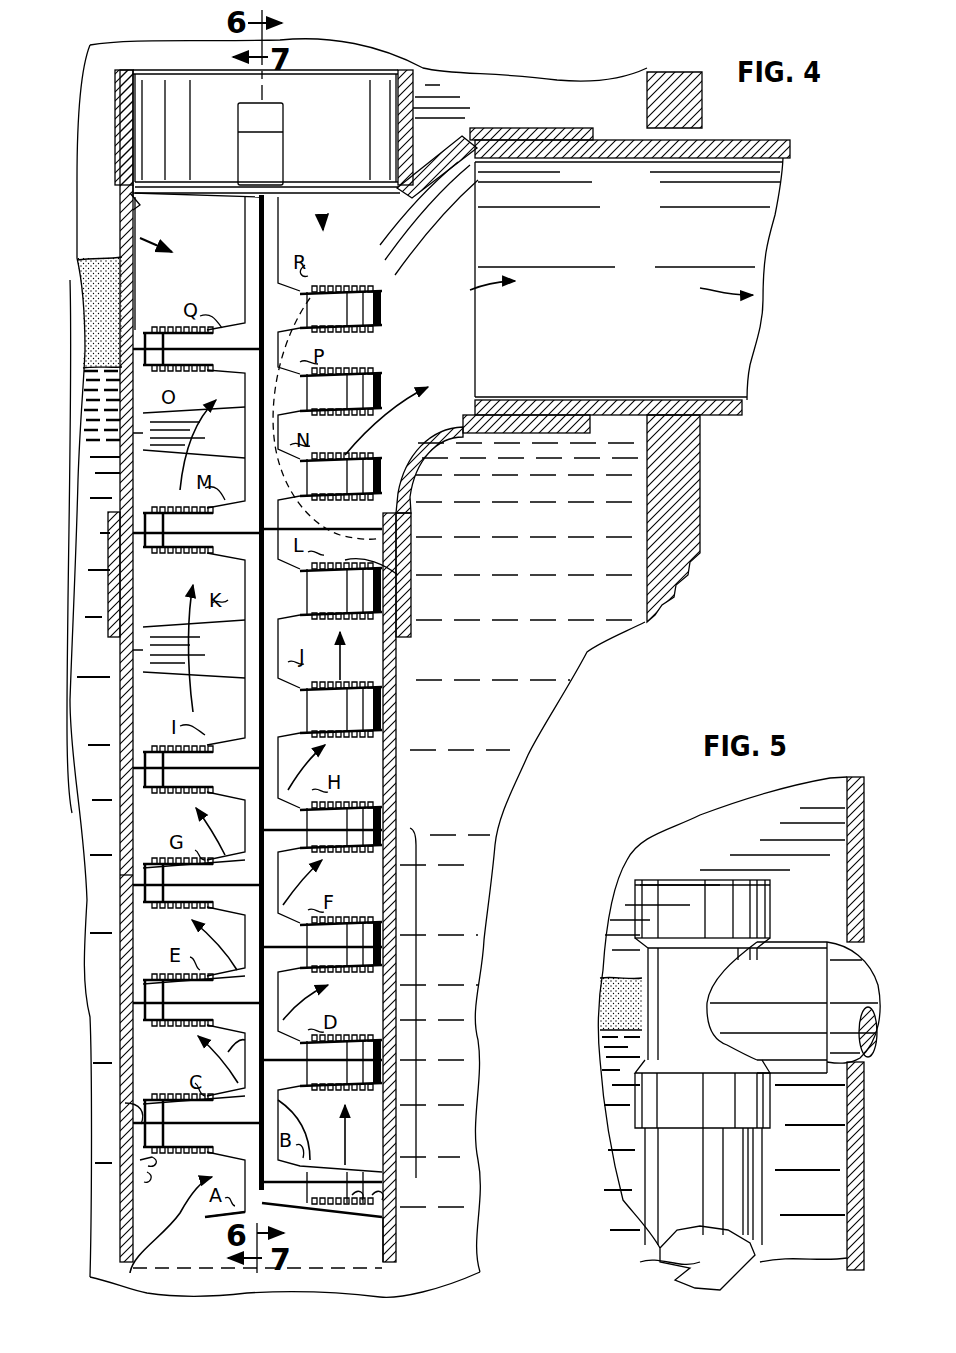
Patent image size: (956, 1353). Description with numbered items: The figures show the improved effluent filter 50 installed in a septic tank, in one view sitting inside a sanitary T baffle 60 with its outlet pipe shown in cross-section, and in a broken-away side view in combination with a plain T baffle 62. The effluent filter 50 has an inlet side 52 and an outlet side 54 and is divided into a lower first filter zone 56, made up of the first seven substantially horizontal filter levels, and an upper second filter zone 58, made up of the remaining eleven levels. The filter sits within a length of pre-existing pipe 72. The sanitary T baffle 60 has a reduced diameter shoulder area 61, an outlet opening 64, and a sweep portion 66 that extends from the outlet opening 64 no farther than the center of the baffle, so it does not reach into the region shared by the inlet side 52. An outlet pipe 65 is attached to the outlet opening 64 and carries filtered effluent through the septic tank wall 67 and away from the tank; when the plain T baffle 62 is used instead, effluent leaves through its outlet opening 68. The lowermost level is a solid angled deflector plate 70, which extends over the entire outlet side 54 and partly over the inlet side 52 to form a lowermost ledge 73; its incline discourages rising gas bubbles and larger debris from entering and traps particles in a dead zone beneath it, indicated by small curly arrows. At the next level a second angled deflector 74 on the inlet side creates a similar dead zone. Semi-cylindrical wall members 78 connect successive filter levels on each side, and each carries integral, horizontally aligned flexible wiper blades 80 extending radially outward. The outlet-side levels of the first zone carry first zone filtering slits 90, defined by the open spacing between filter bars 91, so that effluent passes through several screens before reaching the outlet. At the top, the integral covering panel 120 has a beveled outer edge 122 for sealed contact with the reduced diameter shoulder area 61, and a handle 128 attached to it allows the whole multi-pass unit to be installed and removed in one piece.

In FIG. 4, the effluent filter 50 is at (121, 737).
In FIG. 4, the inlet side 52 is at (140, 238).
In FIG. 4, the outlet side 54 is at (322, 215).
In FIG. 4, the first filter zone 56 is at (416, 1037).
In FIG. 4, the second filter zone 58 is at (68, 473).
In FIG. 4, the sanitary T baffle 60 is at (123, 355).
In FIG. 4, the reduced diameter shoulder area 61 is at (122, 190).
In FIG. 5, the T baffle 62 is at (673, 1012).
In FIG. 4, the outlet opening 64 is at (560, 127).
In FIG. 4, the outlet pipe 65 is at (730, 417).
In FIG. 5, the outlet pipe 65 is at (850, 1033).
In FIG. 4, the sweep portion 66 is at (423, 452).
In FIG. 4, the septic tank wall 67 is at (688, 130).
In FIG. 5, the septic tank wall 67 is at (857, 1138).
In FIG. 5, the outlet opening 68 is at (800, 947).
In FIG. 4, the angled deflector plate 70 is at (398, 1217).
In FIG. 4, the pipe 72 is at (125, 881).
In FIG. 5, the pipe 72 is at (657, 1197).
In FIG. 4, the lowermost ledge 73 is at (204, 1216).
In FIG. 4, the second angled deflector 74 is at (135, 1162).
In FIG. 4, the semi-cylindrical wall members 78 is at (400, 792).
In FIG. 4, the wiper blades 80 is at (124, 1103).
In FIG. 4, the first zone filtering slits 90 is at (385, 572).
In FIG. 4, the filter bars 91 is at (385, 653).
In FIG. 4, the integral covering panel 120 is at (158, 175).
In FIG. 4, the beveled outer edge 122 is at (135, 205).
In FIG. 4, the handle 128 is at (268, 156).